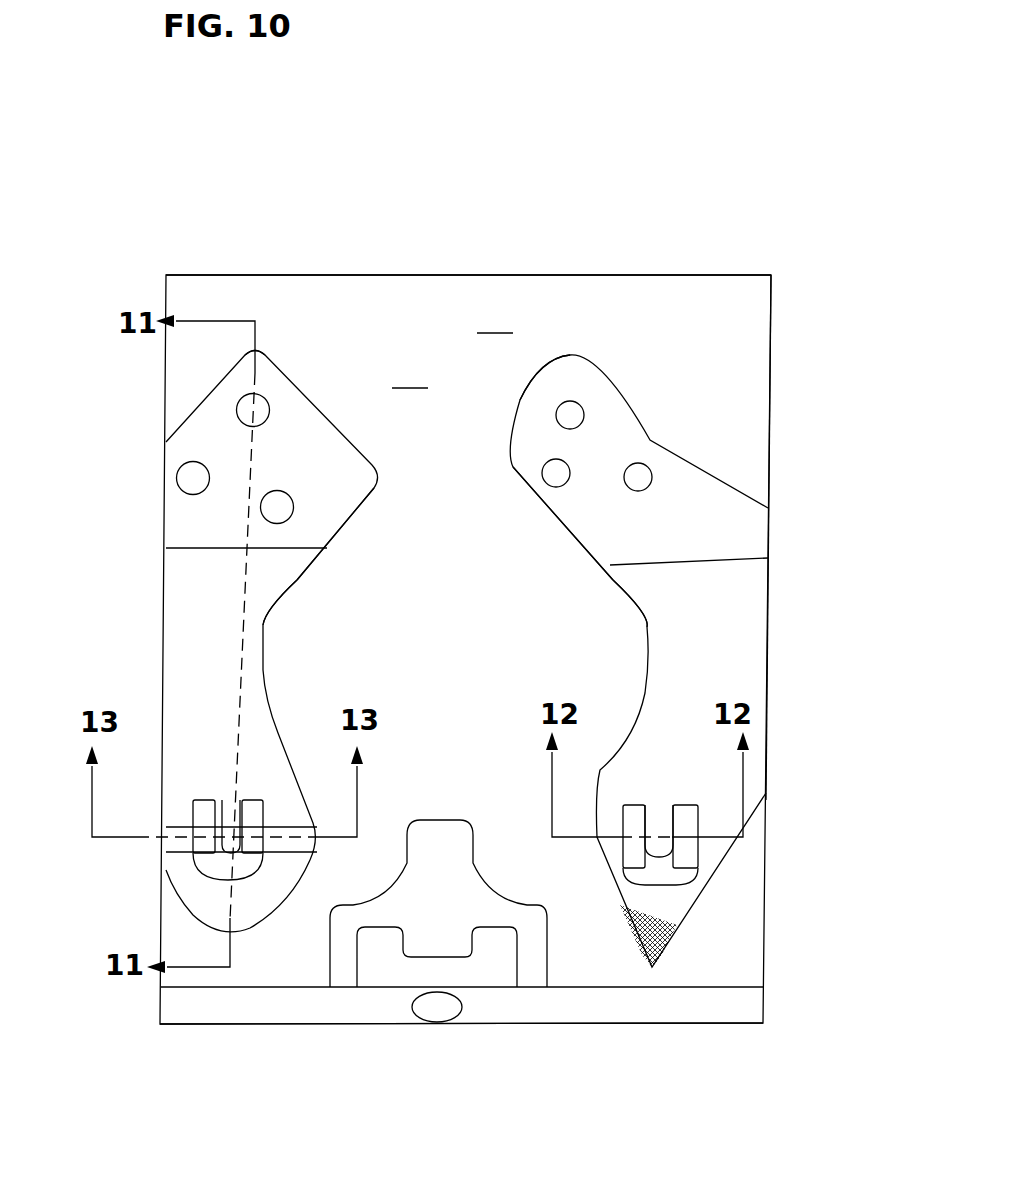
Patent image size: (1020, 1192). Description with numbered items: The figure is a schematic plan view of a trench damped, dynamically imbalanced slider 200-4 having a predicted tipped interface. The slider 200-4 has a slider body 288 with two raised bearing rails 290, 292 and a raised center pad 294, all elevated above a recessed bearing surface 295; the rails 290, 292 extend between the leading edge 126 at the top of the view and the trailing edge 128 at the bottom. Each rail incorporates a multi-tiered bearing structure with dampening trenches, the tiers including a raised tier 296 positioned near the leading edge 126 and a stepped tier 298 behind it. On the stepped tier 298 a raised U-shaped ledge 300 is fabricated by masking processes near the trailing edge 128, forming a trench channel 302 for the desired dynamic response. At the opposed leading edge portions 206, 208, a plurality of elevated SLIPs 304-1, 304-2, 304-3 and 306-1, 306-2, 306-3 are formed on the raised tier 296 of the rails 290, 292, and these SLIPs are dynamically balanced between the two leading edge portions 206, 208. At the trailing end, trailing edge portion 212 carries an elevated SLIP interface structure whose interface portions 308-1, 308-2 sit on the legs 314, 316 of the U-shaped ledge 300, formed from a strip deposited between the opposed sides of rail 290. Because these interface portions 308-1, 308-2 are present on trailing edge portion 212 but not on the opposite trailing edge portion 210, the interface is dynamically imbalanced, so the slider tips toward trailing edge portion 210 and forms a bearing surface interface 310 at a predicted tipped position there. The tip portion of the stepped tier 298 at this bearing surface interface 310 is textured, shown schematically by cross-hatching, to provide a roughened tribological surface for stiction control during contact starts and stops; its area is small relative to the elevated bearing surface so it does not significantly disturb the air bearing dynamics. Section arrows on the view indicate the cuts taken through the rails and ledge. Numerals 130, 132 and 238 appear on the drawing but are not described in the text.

The dynamically imbalanced slider 200-4 is at (433, 258).
The leading edge 126 is at (582, 273).
The trailing edge 128 is at (642, 1022).
The first plate region 130 is at (153, 527).
The second plate region 132 is at (774, 426).
The leading edge portion 206 is at (614, 310).
The leading edge portion 208 is at (322, 410).
The trailing edge portion 210 is at (705, 674).
The trailing edge portion 212 is at (202, 700).
The opening 238 is at (440, 1007).
The slider body 288 is at (298, 466).
The raised bearing rail 290 is at (193, 611).
The raised bearing rail 292 is at (748, 538).
The raised center pad 294 is at (440, 837).
The recessed bearing surface 295 is at (622, 444).
The raised tier 296 is at (332, 503).
The stepped tier 298 is at (278, 582).
The U-shaped ledge 300 is at (243, 871).
The trench channel 302 is at (229, 803).
The elevated SLIP 304-1 is at (177, 463).
The elevated SLIP 304-2 is at (238, 400).
The elevated SLIP 304-3 is at (290, 492).
The elevated SLIP 306-1 is at (580, 400).
The elevated SLIP 306-2 is at (567, 462).
The elevated SLIP 306-3 is at (633, 463).
The interface portion 308-1 is at (203, 845).
The interface portion 308-2 is at (267, 853).
The bearing surface interface 310 is at (677, 938).
The leg 314 is at (205, 800).
The leg 316 is at (260, 800).